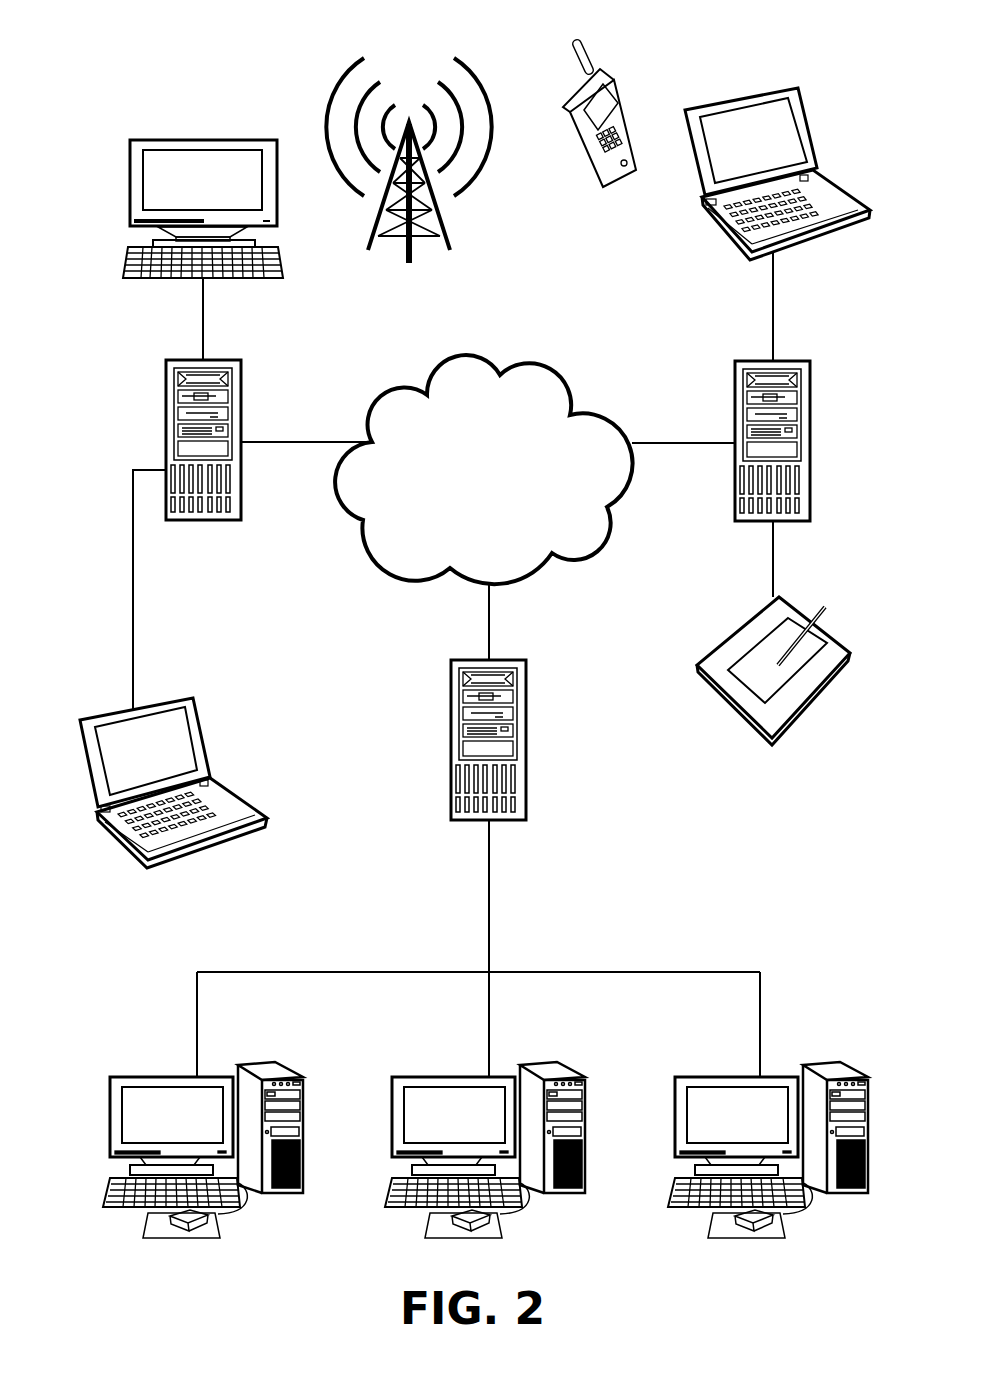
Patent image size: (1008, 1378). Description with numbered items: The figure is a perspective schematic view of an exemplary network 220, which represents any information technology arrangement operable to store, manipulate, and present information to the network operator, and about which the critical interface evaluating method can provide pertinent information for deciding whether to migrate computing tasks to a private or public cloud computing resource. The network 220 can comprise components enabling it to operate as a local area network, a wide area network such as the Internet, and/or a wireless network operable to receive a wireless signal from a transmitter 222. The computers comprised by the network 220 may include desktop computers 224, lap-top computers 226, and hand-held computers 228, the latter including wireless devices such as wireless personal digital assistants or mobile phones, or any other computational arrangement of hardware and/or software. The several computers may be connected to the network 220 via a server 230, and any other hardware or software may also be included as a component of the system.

The network 220 is at (397, 890).
The transmitter 222 is at (486, 158).
The desktop computers 224 is at (130, 215).
The lap-top computers 226 is at (730, 238).
The hand-held computers 228 is at (618, 88).
The server 230 is at (166, 428).